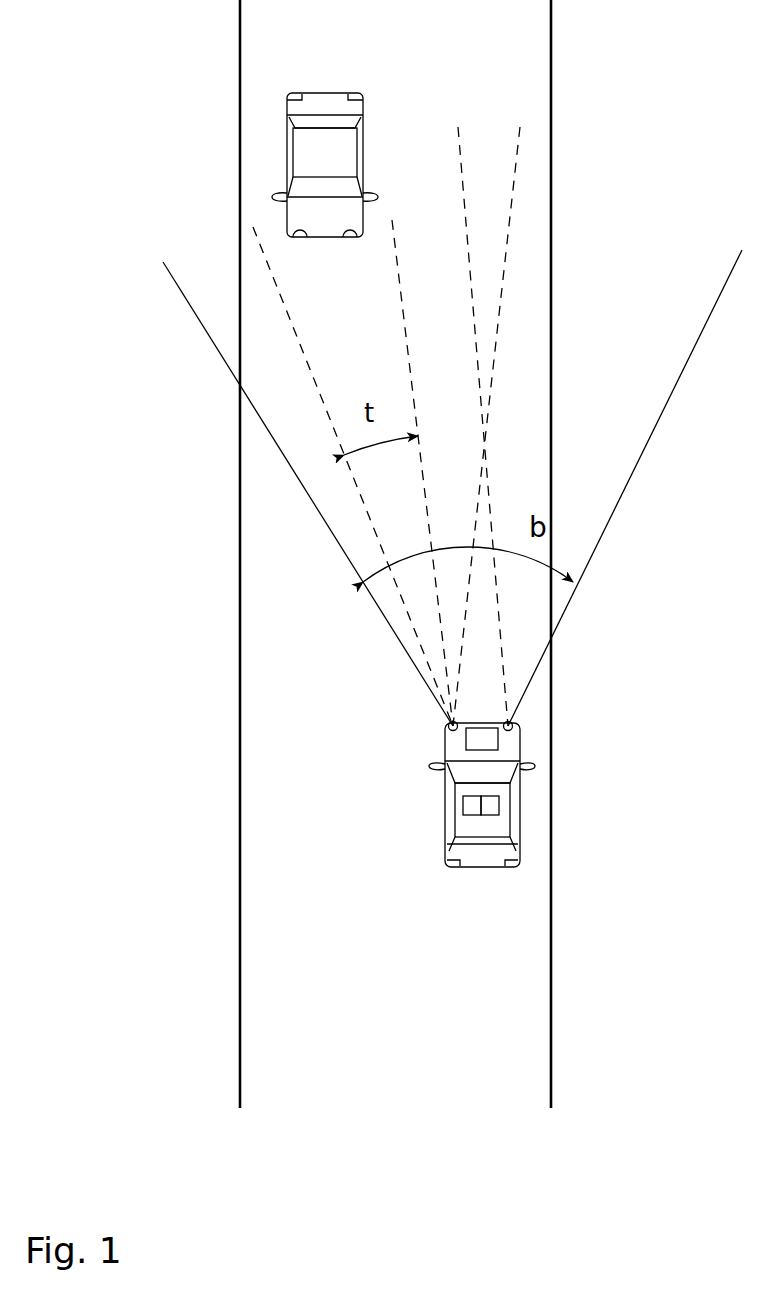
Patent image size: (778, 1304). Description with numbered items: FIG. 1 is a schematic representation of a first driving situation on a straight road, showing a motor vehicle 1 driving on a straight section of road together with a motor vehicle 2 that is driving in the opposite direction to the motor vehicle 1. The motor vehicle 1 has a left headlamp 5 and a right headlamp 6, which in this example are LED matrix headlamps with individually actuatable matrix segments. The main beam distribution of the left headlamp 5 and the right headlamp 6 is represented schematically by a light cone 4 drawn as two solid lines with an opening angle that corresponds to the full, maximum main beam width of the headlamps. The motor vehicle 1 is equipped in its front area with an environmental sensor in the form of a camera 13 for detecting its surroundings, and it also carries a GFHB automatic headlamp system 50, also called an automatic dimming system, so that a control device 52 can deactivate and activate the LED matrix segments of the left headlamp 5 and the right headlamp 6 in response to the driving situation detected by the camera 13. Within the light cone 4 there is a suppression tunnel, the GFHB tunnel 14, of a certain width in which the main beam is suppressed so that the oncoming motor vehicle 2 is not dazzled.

The motor vehicle 1 is at (513, 773).
The motor vehicle 2 is at (271, 156).
The light cone 4 is at (636, 477).
The left headlamp 5 is at (447, 729).
The right headlamp 6 is at (512, 730).
The camera 13 is at (500, 738).
The GFHB tunnel 14 is at (408, 296).
The GFHB automatic headlamp system 50 is at (499, 806).
The control device 52 is at (463, 805).